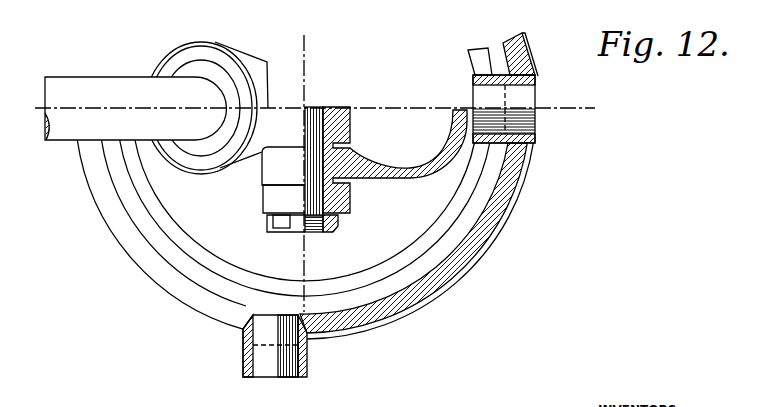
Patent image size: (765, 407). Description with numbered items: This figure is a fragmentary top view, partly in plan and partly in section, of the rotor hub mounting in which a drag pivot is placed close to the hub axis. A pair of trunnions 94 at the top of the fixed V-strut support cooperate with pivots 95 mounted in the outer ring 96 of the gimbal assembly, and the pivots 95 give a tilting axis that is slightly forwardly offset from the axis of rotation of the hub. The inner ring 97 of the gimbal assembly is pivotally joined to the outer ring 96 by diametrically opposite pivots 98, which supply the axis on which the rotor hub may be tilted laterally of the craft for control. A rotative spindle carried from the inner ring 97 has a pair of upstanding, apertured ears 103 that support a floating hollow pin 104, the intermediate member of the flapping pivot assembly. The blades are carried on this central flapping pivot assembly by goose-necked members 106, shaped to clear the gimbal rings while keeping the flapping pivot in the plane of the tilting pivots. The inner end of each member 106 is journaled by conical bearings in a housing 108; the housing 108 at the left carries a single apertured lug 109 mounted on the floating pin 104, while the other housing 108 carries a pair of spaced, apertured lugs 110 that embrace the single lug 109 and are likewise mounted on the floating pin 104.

The trunnion 94 is at (307, 363).
The pivot 95 is at (277, 356).
The outer ring 96 is at (443, 284).
The inner ring 97 is at (448, 218).
The pivot 98 is at (505, 108).
The ear 103 is at (350, 199).
The floating hollow pin 104 is at (330, 107).
The goose-necked member 106 is at (65, 135).
The housing 108 is at (241, 48).
The single apertured lug 109 is at (283, 127).
The spaced apertured lugs 110 is at (275, 166).